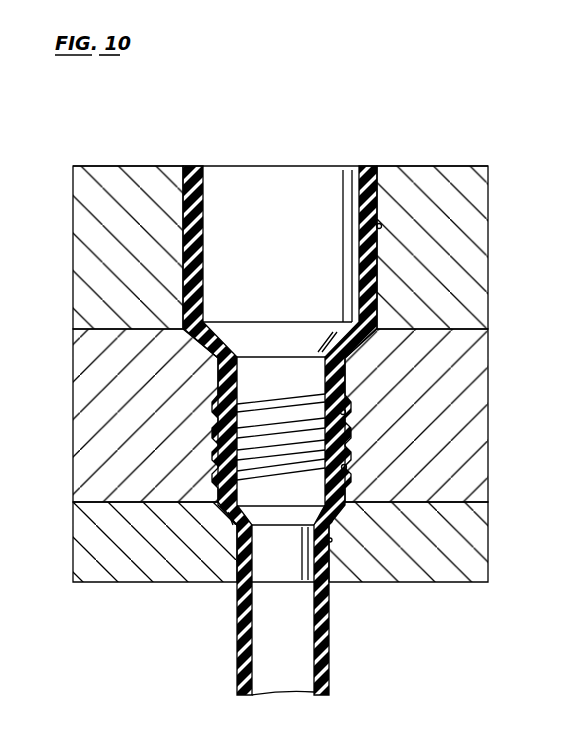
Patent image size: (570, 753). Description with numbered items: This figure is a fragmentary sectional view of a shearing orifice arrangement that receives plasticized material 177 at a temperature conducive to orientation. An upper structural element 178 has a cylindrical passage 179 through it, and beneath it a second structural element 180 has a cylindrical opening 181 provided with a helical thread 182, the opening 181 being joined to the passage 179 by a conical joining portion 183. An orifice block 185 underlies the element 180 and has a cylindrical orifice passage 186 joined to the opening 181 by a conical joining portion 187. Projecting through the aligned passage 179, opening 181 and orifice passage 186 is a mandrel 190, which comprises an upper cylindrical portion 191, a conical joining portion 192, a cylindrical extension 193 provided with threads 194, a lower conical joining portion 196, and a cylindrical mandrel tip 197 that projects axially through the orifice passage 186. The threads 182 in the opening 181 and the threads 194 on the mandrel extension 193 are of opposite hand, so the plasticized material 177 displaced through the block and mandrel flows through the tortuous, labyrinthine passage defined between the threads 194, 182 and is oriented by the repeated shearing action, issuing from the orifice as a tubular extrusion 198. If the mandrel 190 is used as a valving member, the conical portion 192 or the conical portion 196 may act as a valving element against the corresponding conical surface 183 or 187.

The plasticized material 177 is at (362, 172).
The upper structural element 178 is at (487, 182).
The cylindrical passage 179 is at (381, 226).
The second structural element 180 is at (487, 378).
The cylindrical opening 181 is at (345, 412).
The helical thread 182 is at (347, 467).
The conical joining portion 183 is at (355, 345).
The orifice block 185 is at (487, 538).
The cylindrical orifice passage 186 is at (332, 540).
The conical joining portion 187 is at (332, 521).
The mandrel 190 is at (244, 157).
The upper cylindrical portion 191 is at (290, 244).
The conical joining portion 192 is at (290, 348).
The cylindrical extension 193 is at (291, 380).
The threads 194 is at (272, 395).
The lower conical joining portion 196 is at (255, 512).
The cylindrical mandrel tip 197 is at (262, 558).
The tubular extrusion 198 is at (326, 680).